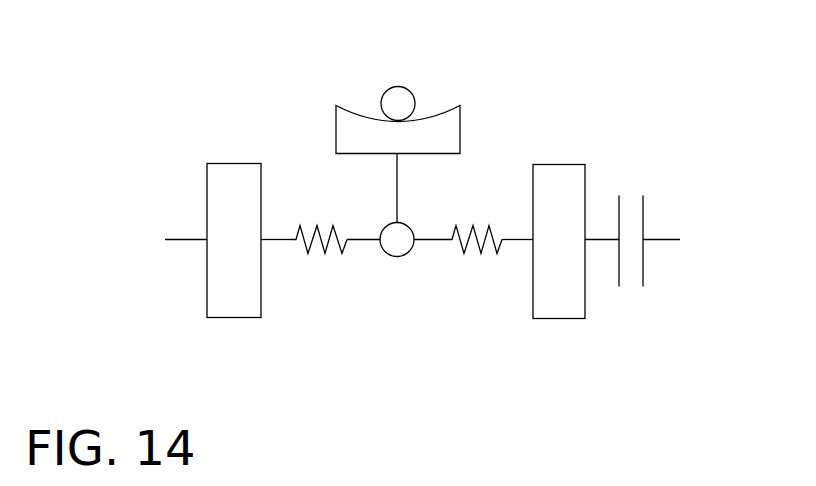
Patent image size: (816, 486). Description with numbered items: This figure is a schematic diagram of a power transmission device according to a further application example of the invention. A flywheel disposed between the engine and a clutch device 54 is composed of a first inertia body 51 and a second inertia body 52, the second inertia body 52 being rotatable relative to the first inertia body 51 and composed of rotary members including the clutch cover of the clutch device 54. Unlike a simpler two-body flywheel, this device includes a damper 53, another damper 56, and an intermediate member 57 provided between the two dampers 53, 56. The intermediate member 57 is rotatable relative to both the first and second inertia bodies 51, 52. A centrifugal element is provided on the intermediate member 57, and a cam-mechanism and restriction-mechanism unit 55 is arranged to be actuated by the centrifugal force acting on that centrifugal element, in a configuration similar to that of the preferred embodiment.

The first inertia body 51 is at (217, 293).
The second inertia body 52 is at (568, 175).
The damper 53 is at (317, 257).
The clutch device 54 is at (645, 212).
The cam-mechanism and restriction-mechanism unit 55 is at (370, 97).
The another damper 56 is at (470, 258).
The intermediate member 57 is at (392, 258).